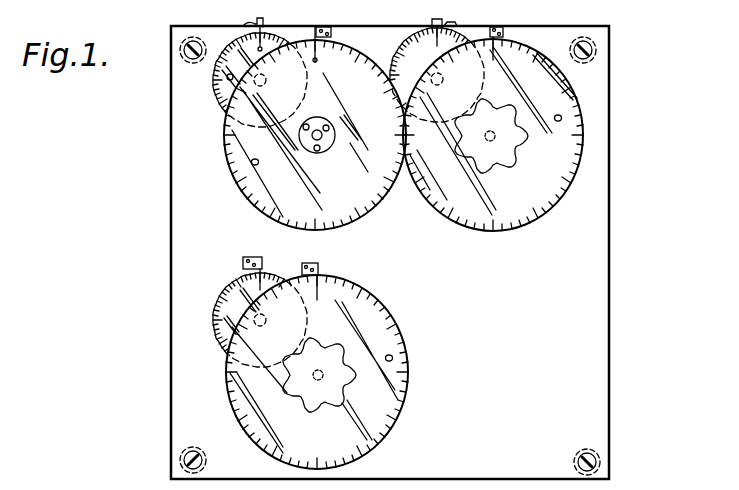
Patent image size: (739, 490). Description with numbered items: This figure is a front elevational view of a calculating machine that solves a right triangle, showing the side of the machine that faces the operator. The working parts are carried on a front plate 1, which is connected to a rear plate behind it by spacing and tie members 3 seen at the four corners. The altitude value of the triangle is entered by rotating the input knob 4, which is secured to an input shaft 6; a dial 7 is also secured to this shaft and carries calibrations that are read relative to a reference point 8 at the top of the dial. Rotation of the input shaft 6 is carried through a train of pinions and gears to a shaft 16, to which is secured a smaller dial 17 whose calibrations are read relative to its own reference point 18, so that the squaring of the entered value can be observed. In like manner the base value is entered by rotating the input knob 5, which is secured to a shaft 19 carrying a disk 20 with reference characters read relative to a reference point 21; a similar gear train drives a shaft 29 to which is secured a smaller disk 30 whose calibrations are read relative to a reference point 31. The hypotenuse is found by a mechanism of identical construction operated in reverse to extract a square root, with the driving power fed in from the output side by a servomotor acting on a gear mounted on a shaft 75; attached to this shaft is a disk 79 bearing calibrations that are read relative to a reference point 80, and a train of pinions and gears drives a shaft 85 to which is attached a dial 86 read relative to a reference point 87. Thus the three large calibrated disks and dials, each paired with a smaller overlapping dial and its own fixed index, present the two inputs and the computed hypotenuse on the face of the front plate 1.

The front plate 1 is at (610, 94).
The spacing and tie members 3 is at (594, 50).
The input knob 4 is at (528, 142).
The input knob 5 is at (406, 352).
The input shaft 6 is at (490, 142).
The dial 7 is at (568, 190).
The reference point 8 is at (504, 32).
The shaft 16 is at (443, 80).
The dial 17 is at (389, 62).
The reference point 18 is at (432, 23).
The shaft 19 is at (318, 381).
The disk 20 is at (400, 310).
The reference point 21 is at (318, 268).
The shaft 29 is at (266, 322).
The disk 30 is at (214, 318).
The reference point 31 is at (266, 246).
The shaft 75 is at (322, 140).
The disk 79 is at (397, 203).
The reference point 80 is at (319, 28).
The shaft 85 is at (266, 83).
The dial 86 is at (227, 78).
The reference point 87 is at (250, 29).